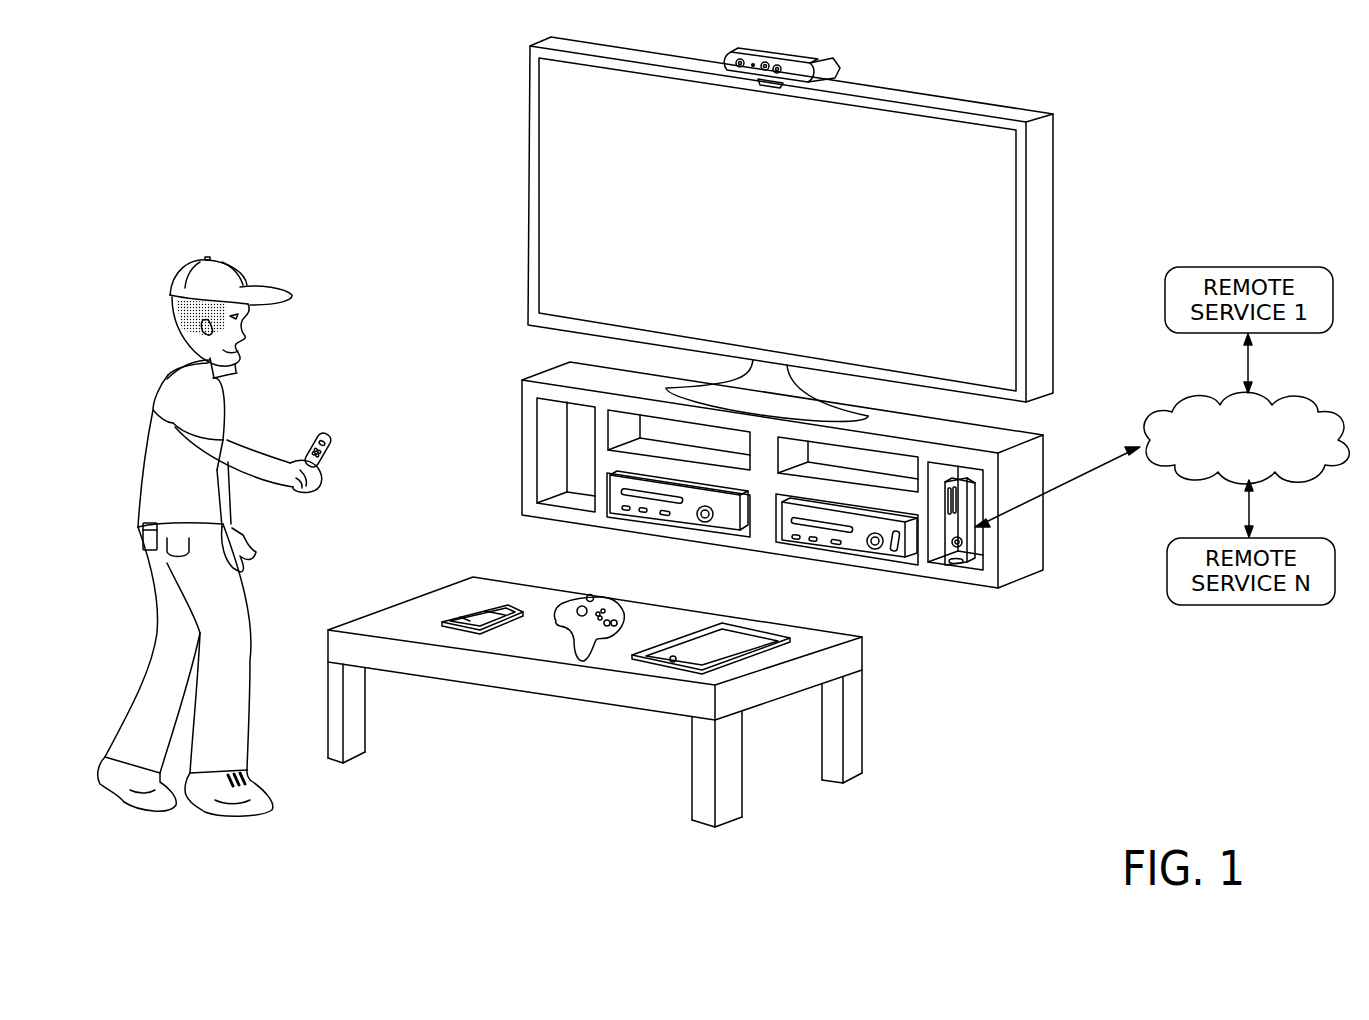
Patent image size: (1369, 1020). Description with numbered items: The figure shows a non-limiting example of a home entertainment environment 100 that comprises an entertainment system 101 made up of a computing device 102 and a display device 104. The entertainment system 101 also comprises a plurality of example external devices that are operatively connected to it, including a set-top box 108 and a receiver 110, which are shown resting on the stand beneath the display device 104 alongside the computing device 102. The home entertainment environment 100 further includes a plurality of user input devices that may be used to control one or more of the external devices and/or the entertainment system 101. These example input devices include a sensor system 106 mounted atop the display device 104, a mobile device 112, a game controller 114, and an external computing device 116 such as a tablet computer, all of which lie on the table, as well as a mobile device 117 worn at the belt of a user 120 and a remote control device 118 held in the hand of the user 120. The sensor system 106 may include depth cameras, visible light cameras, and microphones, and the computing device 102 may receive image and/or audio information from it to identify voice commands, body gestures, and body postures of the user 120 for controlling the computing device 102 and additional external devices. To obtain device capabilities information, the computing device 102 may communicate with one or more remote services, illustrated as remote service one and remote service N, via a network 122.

The home entertainment environment 100 is at (158, 97).
The entertainment system 101 is at (1029, 80).
The computing device 102 is at (961, 567).
The display device 104 is at (1045, 167).
The sensor system 106 is at (838, 62).
The set-top box 108 is at (717, 501).
The receiver 110 is at (857, 523).
The mobile device 112 is at (490, 612).
The game controller 114 is at (603, 600).
The external computing device 116 is at (750, 628).
The mobile device 117 is at (137, 526).
The remote control device 118 is at (327, 432).
The user 120 is at (155, 400).
The network 122 is at (1261, 393).